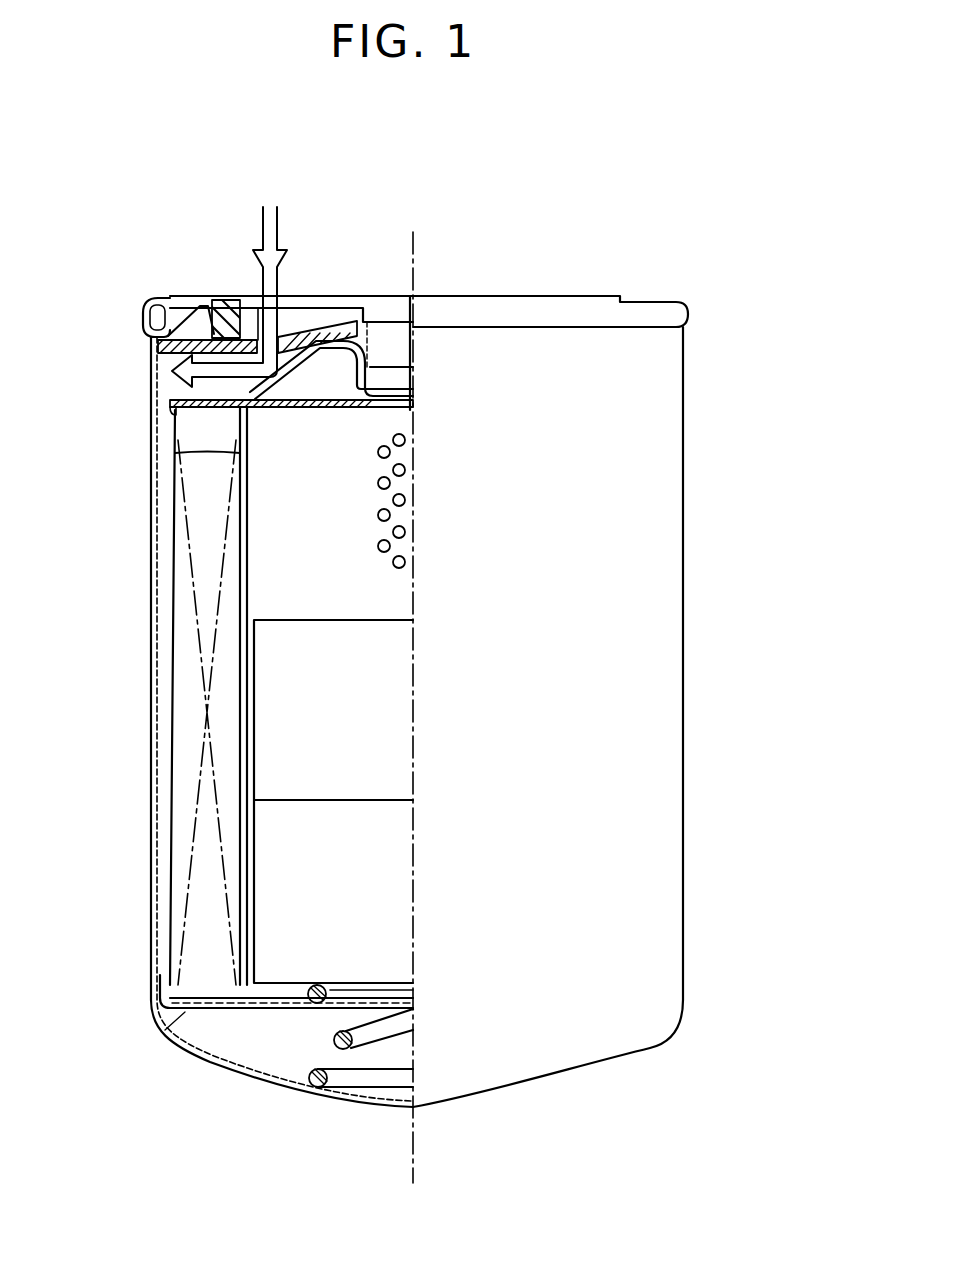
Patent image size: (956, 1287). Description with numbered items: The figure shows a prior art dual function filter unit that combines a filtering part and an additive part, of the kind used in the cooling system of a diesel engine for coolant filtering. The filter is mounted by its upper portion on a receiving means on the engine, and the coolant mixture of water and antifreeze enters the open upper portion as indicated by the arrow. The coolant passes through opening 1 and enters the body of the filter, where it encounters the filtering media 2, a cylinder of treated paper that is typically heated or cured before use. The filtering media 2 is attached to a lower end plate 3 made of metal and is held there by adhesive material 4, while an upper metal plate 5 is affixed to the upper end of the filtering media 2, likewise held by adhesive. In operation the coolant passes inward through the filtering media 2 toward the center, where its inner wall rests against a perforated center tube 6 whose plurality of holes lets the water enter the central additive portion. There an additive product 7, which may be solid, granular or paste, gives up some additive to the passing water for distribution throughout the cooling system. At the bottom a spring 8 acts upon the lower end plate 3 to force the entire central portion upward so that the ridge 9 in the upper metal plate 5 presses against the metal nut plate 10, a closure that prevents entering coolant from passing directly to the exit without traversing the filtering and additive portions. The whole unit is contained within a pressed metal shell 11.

The opening 1 is at (287, 323).
The filtering media 2 is at (205, 677).
The lower end plate 3 is at (163, 985).
The adhesive material 4 is at (195, 1005).
The upper metal plate 5 is at (405, 379).
The perforated center tube 6 is at (238, 452).
The additive product 7 is at (378, 827).
The spring 8 is at (400, 1076).
The ridge 9 is at (357, 355).
The metal nut plate 10 is at (160, 346).
The pressed metal shell 11 is at (150, 573).